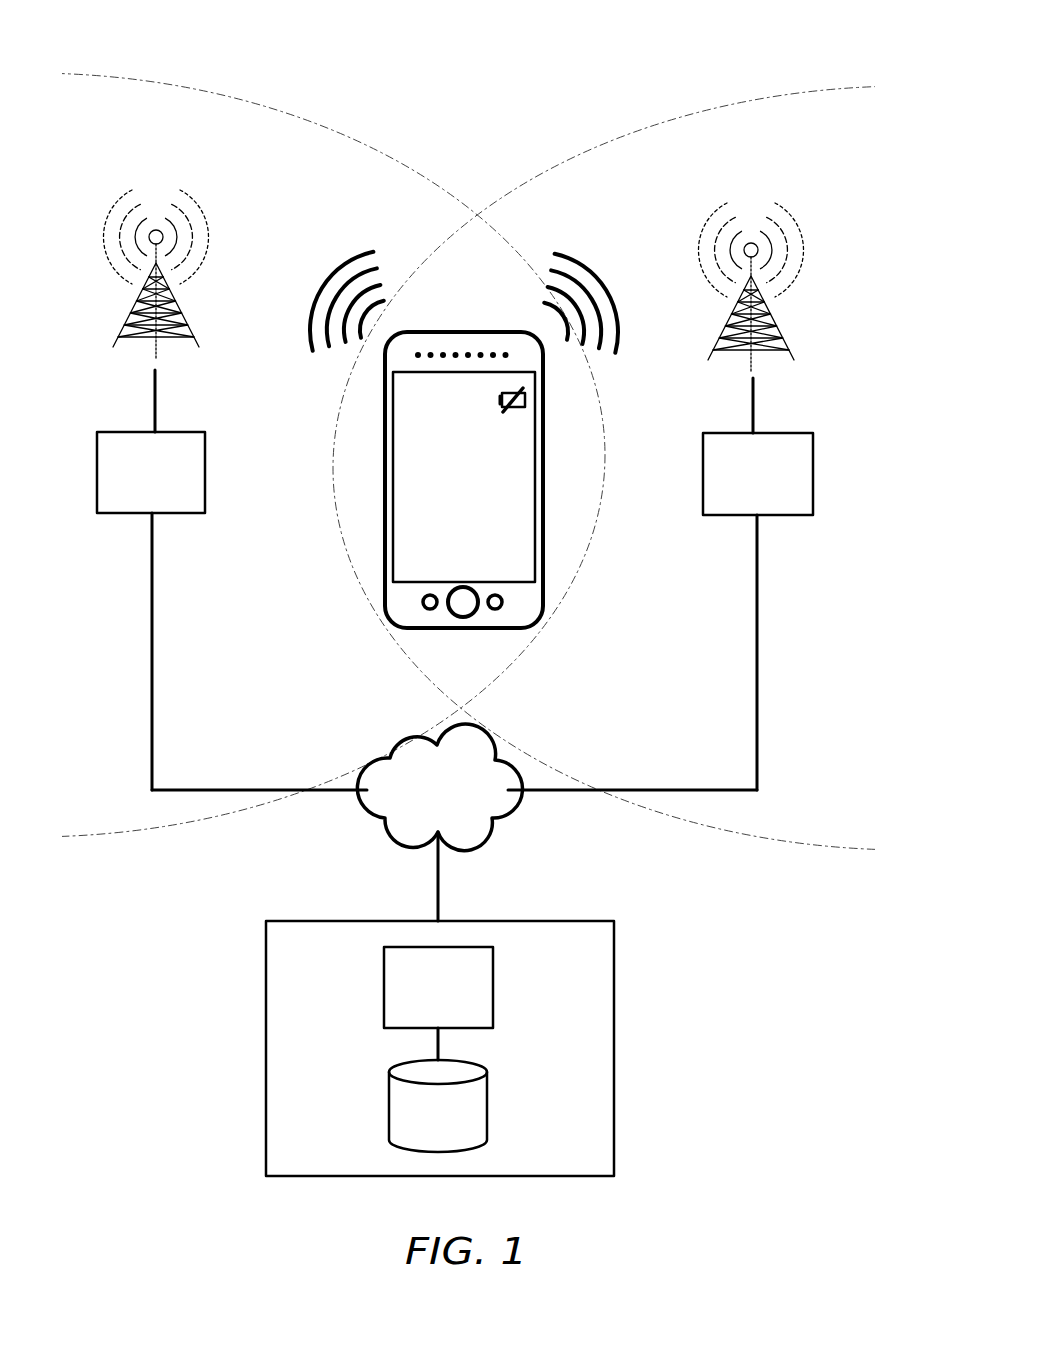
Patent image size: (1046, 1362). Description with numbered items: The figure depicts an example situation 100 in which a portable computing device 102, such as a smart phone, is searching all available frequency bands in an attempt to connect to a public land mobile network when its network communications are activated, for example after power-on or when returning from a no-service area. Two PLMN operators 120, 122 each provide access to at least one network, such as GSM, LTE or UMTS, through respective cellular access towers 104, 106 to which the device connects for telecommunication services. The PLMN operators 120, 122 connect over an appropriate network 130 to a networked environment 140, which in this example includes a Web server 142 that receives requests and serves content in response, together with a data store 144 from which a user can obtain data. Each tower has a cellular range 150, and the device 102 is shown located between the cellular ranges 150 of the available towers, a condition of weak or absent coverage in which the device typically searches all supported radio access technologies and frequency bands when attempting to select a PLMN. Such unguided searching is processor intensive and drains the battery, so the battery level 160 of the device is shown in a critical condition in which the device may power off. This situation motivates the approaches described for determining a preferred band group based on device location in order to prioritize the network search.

The situation 100 is at (630, 108).
The computing device 102 is at (386, 598).
The cellular access tower 104 is at (112, 210).
The cellular access tower 106 is at (798, 223).
The PLMN operator 120 is at (96, 448).
The PLMN operator 122 is at (812, 442).
The network 130 is at (382, 815).
The networked environment 140 is at (266, 932).
The Web server 142 is at (384, 1000).
The data store 144 is at (389, 1108).
The cellular range 150 is at (226, 97).
The battery level 160 is at (525, 400).